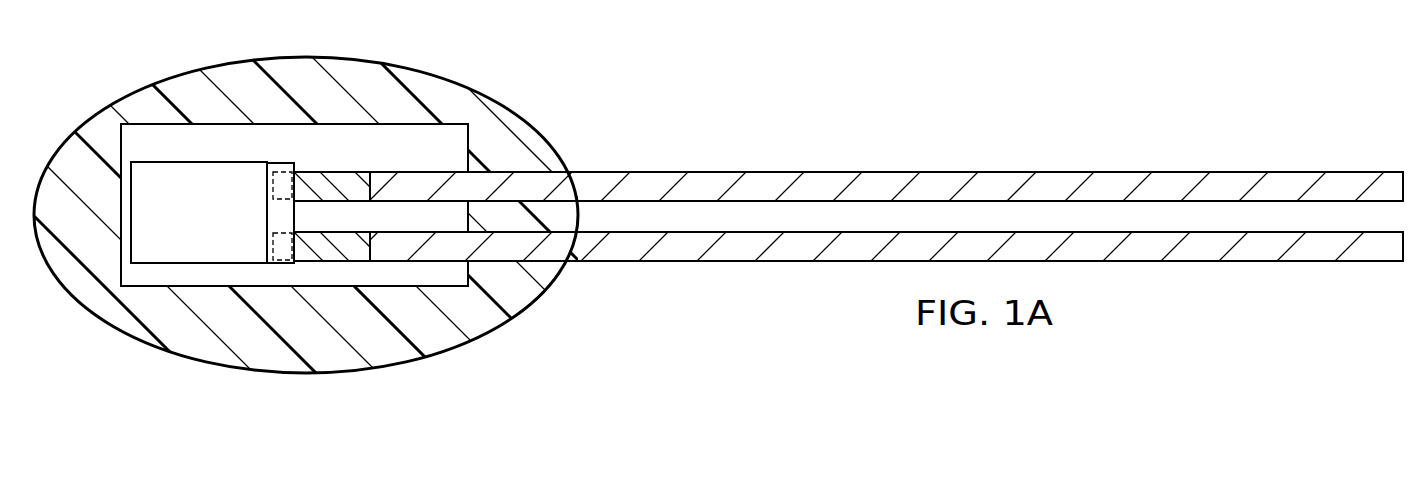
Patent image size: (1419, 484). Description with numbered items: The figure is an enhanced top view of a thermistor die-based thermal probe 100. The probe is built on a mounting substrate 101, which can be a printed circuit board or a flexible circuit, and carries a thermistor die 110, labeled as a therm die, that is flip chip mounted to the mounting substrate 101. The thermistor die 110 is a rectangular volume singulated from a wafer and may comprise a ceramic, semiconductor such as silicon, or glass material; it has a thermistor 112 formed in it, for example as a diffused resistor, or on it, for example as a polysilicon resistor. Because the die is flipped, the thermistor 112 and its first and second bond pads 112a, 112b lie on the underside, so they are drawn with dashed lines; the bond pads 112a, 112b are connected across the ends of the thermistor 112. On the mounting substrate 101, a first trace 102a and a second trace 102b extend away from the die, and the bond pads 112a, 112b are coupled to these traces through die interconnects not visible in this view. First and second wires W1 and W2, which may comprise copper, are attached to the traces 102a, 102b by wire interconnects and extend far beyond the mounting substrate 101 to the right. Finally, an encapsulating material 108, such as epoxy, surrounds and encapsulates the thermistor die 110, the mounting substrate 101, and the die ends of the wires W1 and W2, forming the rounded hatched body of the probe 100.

The thermistor die-based thermal probe 100 is at (845, 93).
The mounting substrate 101 is at (418, 132).
The first trace 102a is at (308, 182).
The second trace 102b is at (352, 250).
The encapsulating material 108 is at (178, 85).
The thermistor die 110 is at (147, 255).
The thermistor 112 is at (258, 220).
The first bond pad 112a is at (277, 192).
The second bond pad 112b is at (280, 256).
The first wire W1 is at (1136, 269).
The second wire W2 is at (1118, 165).